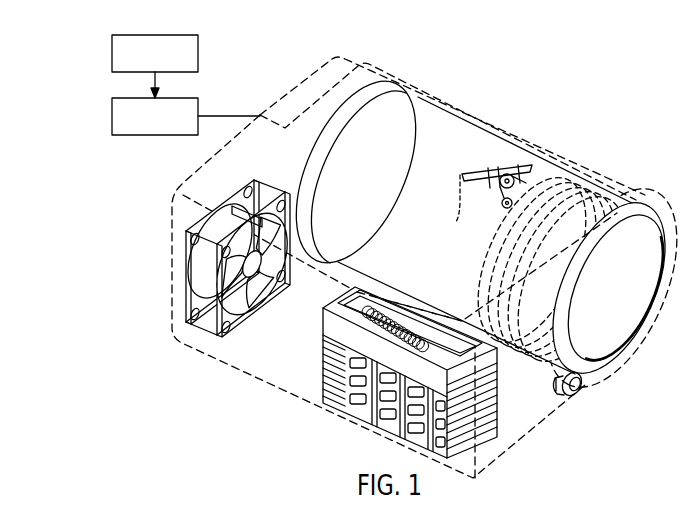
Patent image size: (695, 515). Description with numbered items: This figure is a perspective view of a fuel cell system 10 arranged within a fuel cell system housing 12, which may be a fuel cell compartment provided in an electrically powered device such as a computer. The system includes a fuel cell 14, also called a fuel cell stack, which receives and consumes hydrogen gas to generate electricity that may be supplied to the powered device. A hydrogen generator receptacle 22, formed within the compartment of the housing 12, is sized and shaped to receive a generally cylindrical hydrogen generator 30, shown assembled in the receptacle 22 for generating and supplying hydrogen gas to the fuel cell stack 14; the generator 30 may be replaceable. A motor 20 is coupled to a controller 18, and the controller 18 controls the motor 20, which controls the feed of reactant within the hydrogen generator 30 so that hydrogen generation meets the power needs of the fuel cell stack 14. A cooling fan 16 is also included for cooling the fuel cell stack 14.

The fuel cell system 10 is at (569, 112).
The fuel cell system housing 12 is at (625, 182).
The fuel cell 14 is at (498, 428).
The cooling fan 16 is at (205, 277).
The controller 18 is at (198, 36).
The motor 20 is at (198, 99).
The hydrogen generator receptacle 22 is at (632, 333).
The hydrogen generator 30 is at (455, 137).